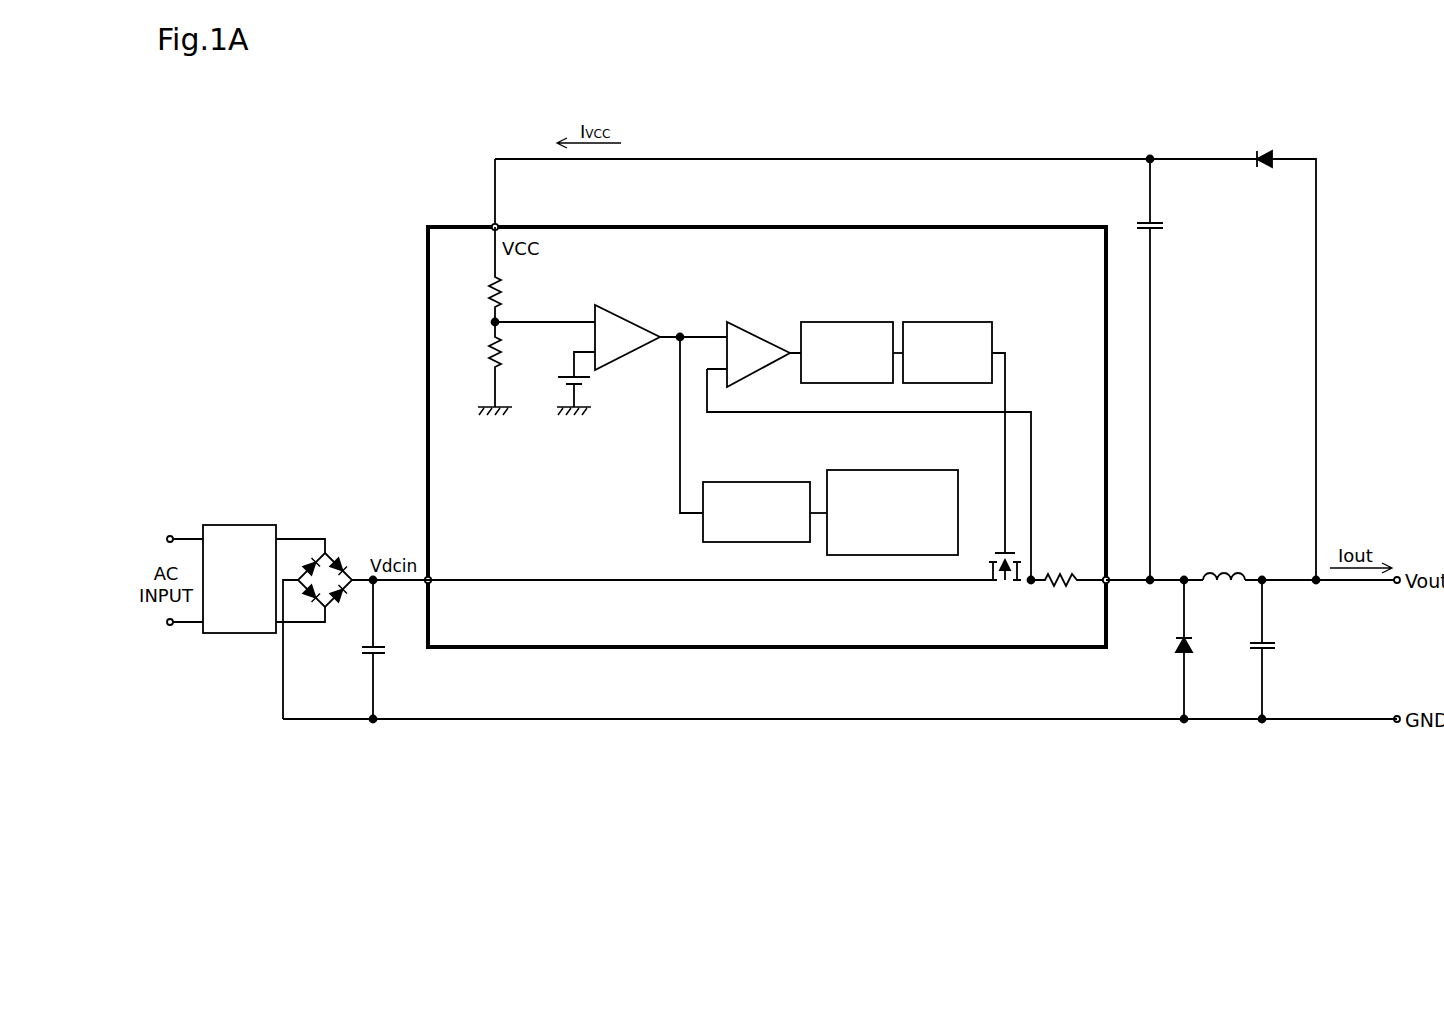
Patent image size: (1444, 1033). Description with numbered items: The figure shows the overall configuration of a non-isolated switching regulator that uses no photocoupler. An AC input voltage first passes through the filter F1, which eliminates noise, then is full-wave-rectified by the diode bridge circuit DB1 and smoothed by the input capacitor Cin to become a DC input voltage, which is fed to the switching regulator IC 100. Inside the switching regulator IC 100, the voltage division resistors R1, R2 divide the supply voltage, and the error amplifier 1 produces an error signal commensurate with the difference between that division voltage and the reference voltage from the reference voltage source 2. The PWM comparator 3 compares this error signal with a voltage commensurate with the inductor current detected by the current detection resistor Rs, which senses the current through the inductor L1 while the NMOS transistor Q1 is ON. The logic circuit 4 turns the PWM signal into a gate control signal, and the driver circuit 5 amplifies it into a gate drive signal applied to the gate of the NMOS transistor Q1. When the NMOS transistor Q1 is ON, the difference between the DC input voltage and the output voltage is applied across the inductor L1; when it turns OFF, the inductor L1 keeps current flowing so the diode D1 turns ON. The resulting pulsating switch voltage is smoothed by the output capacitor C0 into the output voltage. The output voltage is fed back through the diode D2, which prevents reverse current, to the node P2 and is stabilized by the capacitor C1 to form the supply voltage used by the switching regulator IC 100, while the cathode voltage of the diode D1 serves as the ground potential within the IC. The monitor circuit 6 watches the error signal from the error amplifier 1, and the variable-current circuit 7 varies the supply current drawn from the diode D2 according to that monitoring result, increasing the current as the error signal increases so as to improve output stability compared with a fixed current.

The error amplifier 1 is at (632, 318).
The reference voltage source 2 is at (557, 378).
The PWM comparator 3 is at (760, 336).
The logic circuit 4 is at (848, 322).
The driver circuit 5 is at (947, 322).
The monitor circuit 6 is at (758, 482).
The variable-current circuit 7 is at (895, 470).
The switching regulator IC 100 is at (443, 226).
The voltage division resistor R1 is at (489, 288).
The voltage division resistor R2 is at (489, 344).
The NMOS transistor Q1 is at (1005, 590).
The current detection resistor Rs is at (1060, 590).
The node P2 is at (1152, 157).
The capacitor C1 is at (1166, 226).
The diode D2 is at (1265, 149).
The diode D1 is at (1174, 645).
The inductor L1 is at (1222, 569).
The output capacitor C0 is at (1278, 646).
The filter F1 is at (238, 525).
The diode bridge circuit DB1 is at (343, 562).
The input capacitor Cin is at (359, 650).